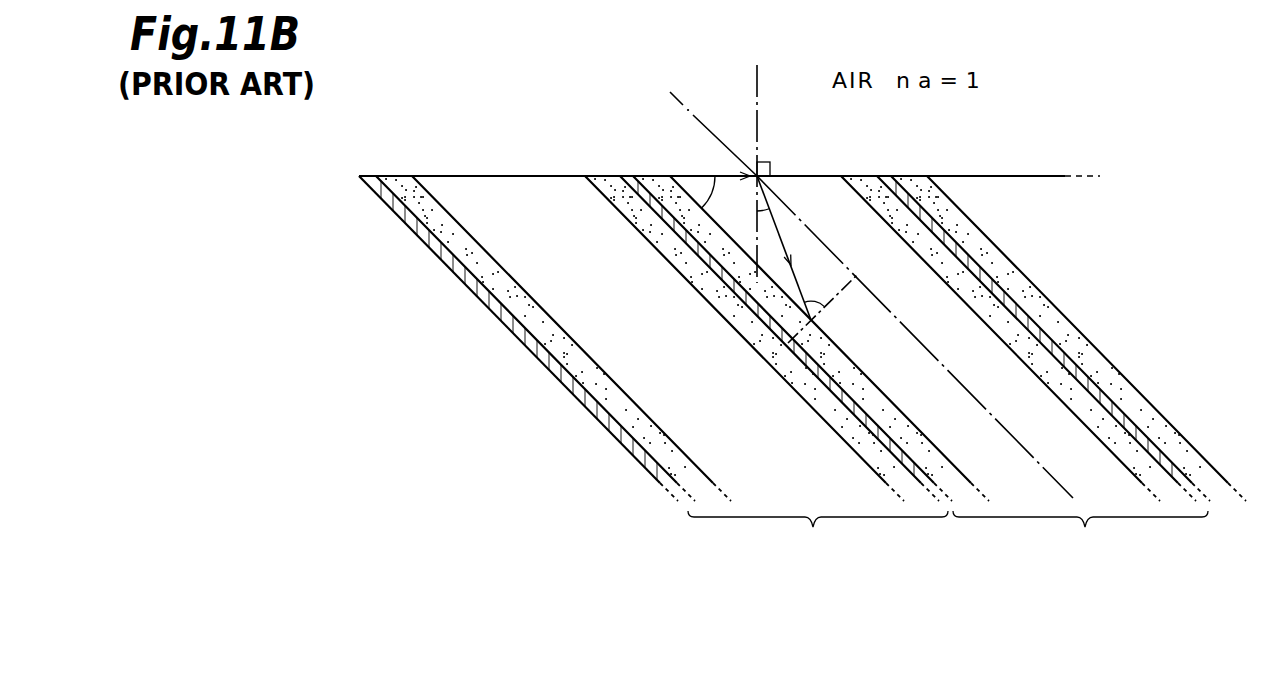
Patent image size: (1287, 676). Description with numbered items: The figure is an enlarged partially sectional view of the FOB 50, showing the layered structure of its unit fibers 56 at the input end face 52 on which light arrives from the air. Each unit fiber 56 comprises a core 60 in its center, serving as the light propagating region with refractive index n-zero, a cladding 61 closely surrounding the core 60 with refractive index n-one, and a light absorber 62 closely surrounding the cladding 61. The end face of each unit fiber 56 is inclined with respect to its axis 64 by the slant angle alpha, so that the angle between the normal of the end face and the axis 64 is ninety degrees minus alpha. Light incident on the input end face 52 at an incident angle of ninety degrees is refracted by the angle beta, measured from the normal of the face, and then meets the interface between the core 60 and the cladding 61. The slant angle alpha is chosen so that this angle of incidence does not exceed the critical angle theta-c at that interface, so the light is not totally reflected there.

The FOB 50 is at (795, 312).
The input end face 52 is at (1027, 177).
The unit fiber 56 is at (948, 537).
The core 60 is at (508, 183).
The cladding 61 is at (398, 176).
The light absorber 62 is at (371, 176).
The axis 64 is at (700, 120).